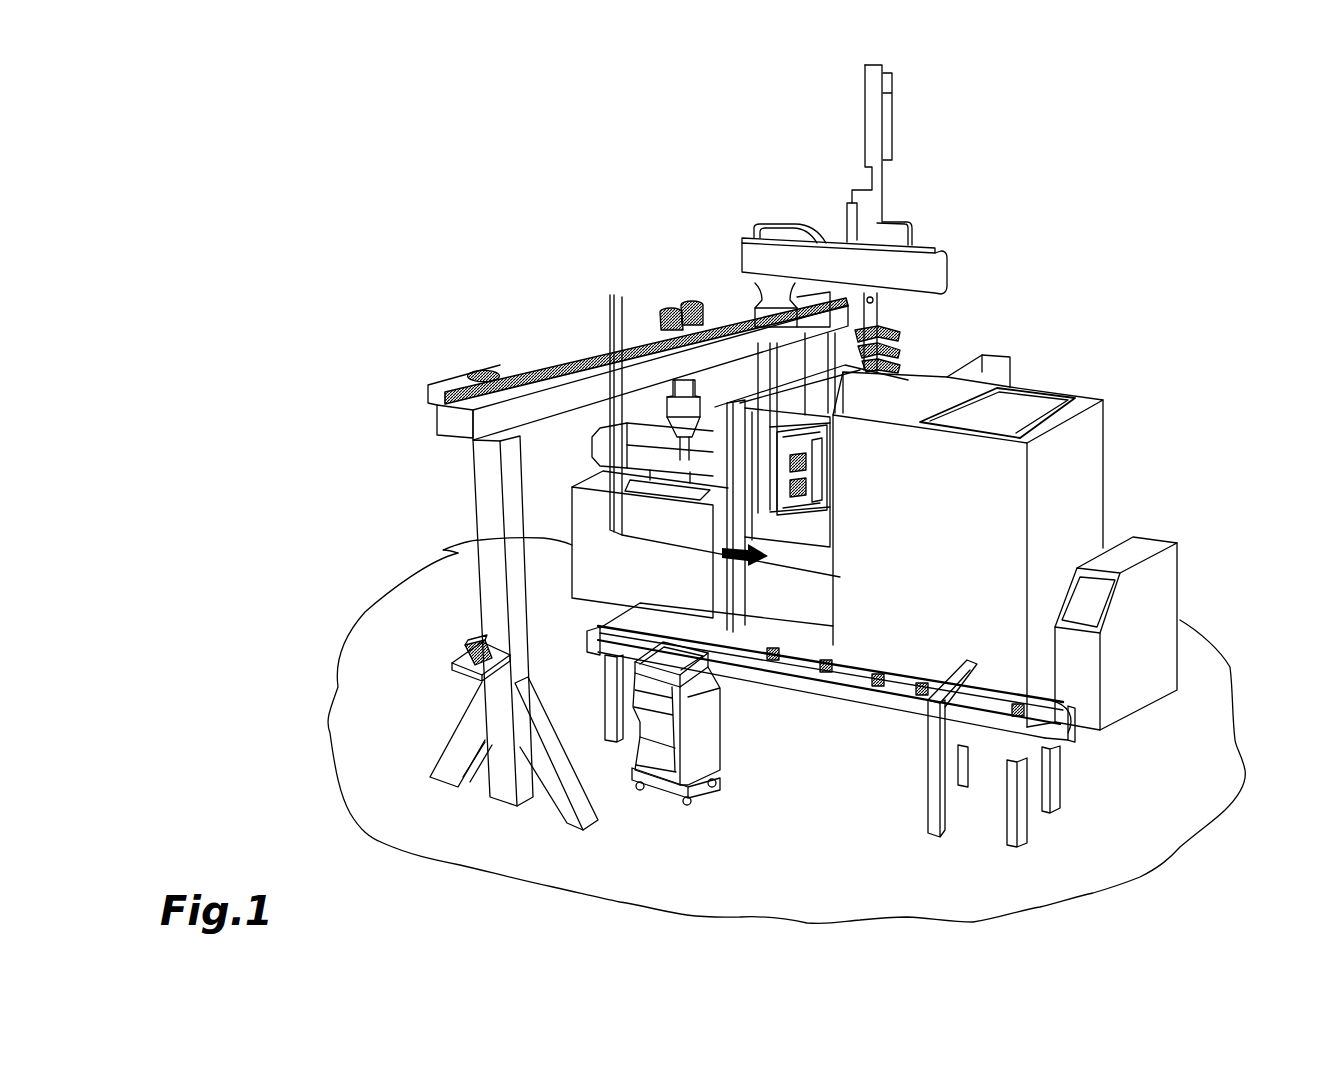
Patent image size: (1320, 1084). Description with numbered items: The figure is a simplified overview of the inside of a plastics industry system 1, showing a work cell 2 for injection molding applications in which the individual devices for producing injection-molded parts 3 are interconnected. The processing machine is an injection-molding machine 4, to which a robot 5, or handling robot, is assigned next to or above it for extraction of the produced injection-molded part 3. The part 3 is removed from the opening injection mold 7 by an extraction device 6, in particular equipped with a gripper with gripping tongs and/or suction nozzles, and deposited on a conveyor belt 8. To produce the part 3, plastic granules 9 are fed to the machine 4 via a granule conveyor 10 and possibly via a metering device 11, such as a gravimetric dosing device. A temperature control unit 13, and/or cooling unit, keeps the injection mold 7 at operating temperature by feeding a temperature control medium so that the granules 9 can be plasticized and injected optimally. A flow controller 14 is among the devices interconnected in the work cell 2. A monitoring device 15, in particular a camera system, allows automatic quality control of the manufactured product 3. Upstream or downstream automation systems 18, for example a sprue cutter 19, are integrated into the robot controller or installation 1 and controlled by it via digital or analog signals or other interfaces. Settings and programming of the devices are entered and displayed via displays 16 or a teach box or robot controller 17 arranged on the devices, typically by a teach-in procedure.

The plastics industry system 1 is at (308, 197).
The work cell 2 is at (1096, 245).
The injection-molded part 3 is at (822, 683).
The injection-molding machine 4 is at (1057, 472).
The robot 5 is at (833, 267).
The extraction device 6 is at (903, 333).
The injection mold 7 is at (827, 503).
The conveyor belt 8 is at (897, 688).
The plastic granules 9 is at (660, 312).
The granule conveyor 10 is at (686, 303).
The metering device 11 is at (684, 400).
The temperature control unit 13 is at (1153, 588).
The flow controller 14 is at (1000, 378).
The monitoring device 15 is at (955, 702).
The display 16 is at (1085, 600).
The robot controller 17 is at (450, 643).
The automation system 18 is at (585, 515).
The sprue cutter 19 is at (757, 561).